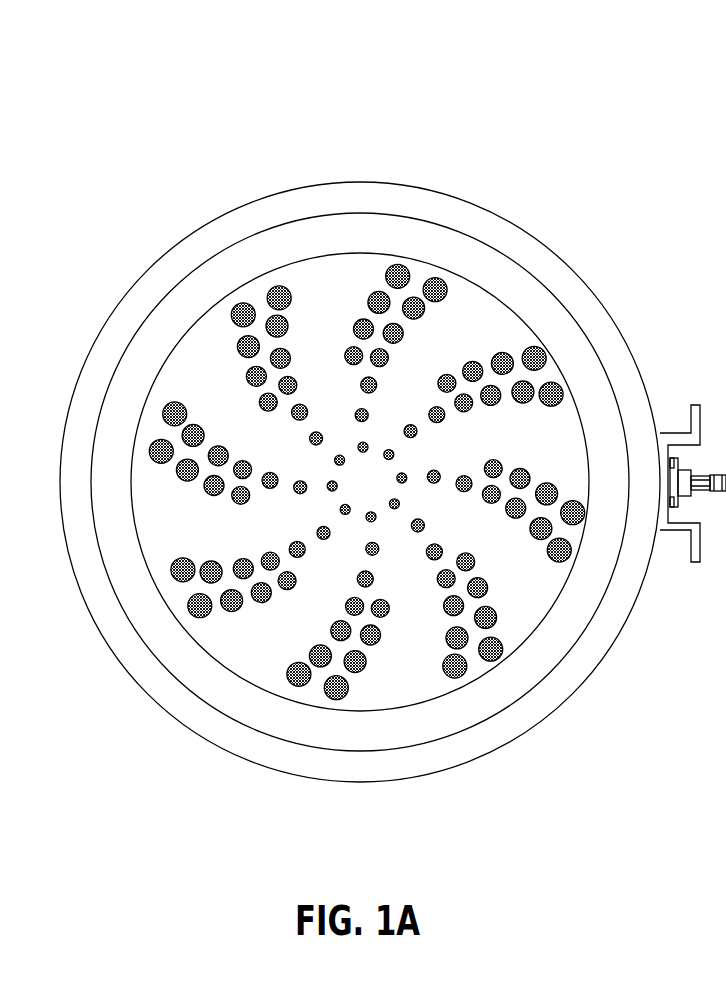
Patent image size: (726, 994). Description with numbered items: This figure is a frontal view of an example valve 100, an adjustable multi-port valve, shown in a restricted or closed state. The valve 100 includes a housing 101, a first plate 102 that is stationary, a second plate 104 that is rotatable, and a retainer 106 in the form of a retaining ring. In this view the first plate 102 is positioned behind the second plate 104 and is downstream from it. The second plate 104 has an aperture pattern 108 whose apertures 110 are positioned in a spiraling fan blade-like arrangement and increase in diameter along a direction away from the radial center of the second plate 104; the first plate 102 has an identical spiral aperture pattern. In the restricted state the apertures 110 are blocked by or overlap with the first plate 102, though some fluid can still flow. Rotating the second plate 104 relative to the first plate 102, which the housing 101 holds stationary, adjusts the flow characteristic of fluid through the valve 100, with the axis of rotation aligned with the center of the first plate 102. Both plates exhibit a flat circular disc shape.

The valve 100 is at (455, 93).
The housing 101 is at (523, 243).
The first plate 102 is at (437, 278).
The second plate 104 is at (170, 384).
The retainer 106 is at (458, 245).
The aperture pattern 108 is at (355, 298).
The apertures 110 is at (537, 345).